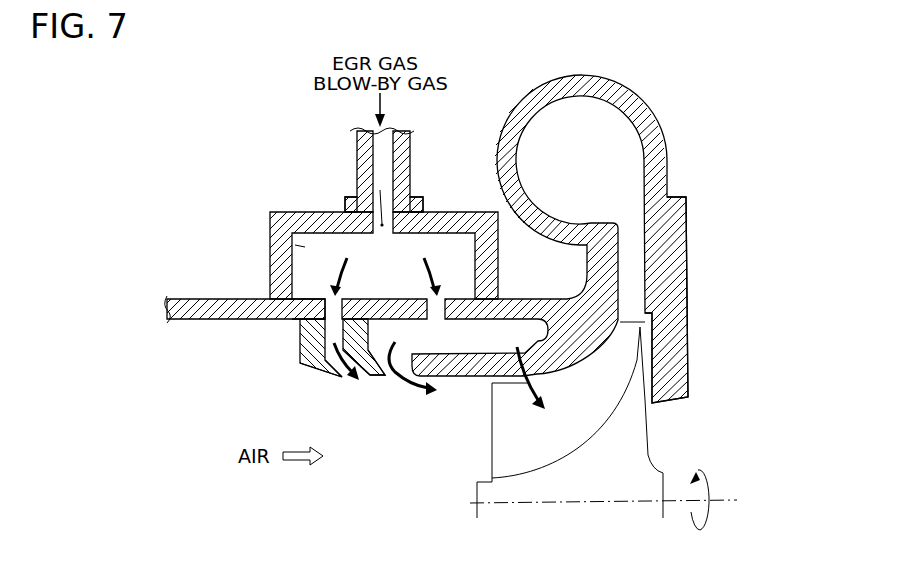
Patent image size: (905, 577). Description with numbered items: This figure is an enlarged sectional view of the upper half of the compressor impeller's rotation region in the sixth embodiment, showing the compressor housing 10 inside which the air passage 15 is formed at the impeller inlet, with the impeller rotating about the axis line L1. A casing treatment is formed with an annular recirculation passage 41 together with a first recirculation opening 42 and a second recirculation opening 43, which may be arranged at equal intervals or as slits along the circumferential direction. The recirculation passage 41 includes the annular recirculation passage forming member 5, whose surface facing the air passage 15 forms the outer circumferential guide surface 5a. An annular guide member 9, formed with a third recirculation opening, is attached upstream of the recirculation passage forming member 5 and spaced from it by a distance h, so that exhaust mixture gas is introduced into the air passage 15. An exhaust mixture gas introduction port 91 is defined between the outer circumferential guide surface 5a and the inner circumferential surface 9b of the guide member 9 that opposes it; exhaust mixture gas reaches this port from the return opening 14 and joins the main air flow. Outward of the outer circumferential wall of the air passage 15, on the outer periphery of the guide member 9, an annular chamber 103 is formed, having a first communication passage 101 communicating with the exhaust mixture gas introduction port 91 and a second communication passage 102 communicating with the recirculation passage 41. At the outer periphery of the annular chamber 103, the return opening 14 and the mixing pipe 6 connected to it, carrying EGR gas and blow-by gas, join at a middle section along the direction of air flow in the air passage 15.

The recirculation passage forming member 5 is at (380, 380).
The outer circumferential guide surface 5a is at (366, 378).
The mixing pipe 6 is at (357, 153).
The guide member 9 is at (300, 355).
The inner circumferential surface 9b is at (340, 377).
The compressor housing 10 is at (657, 128).
The return opening 14 is at (362, 183).
The air passage 15 is at (207, 493).
The recirculation passage 41 is at (474, 338).
The first recirculation opening 42 is at (390, 380).
The second recirculation opening 43 is at (537, 385).
The exhaust mixture gas introduction port 91 is at (355, 385).
The first communication passage 101 is at (327, 298).
The second communication passage 102 is at (445, 292).
The annular chamber 103 is at (272, 217).
The distance h is at (300, 332).
The axis line L1 is at (621, 500).